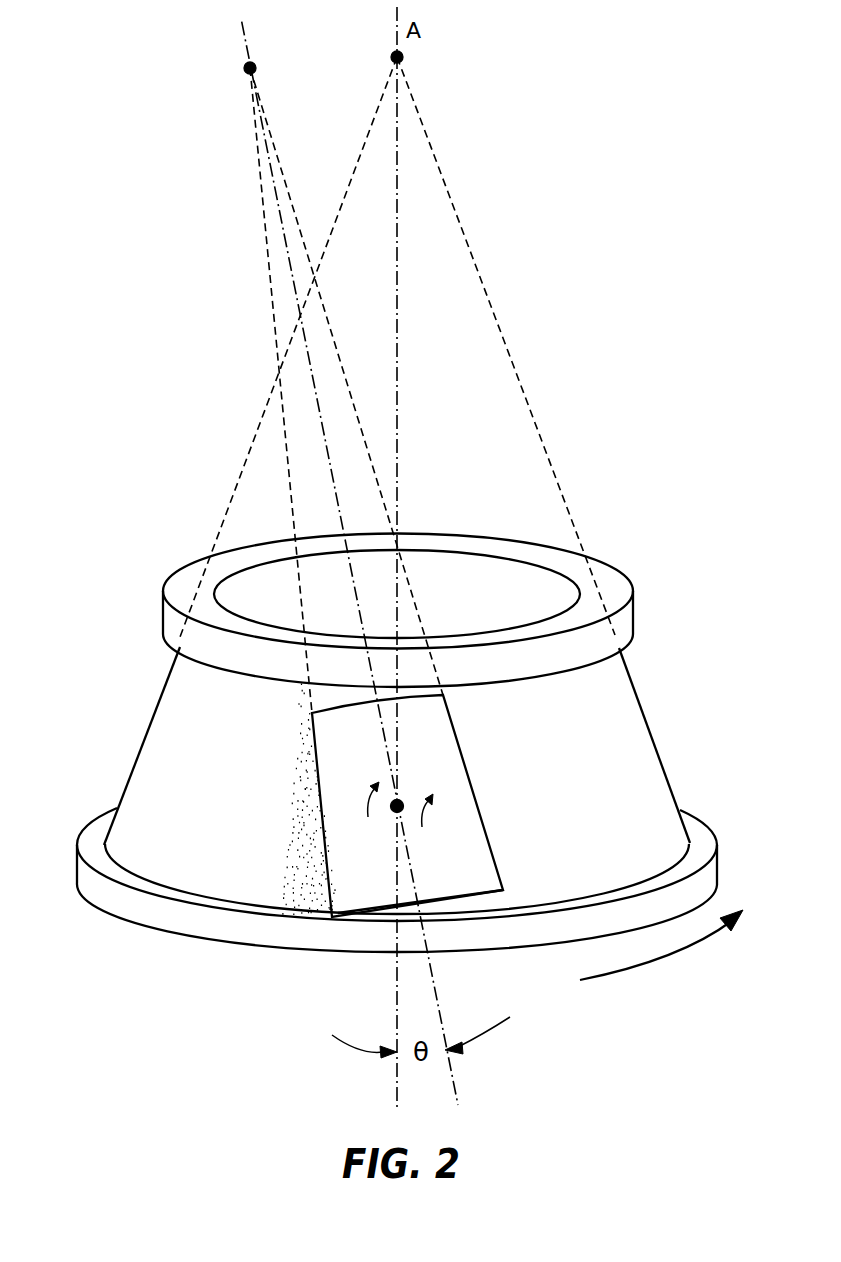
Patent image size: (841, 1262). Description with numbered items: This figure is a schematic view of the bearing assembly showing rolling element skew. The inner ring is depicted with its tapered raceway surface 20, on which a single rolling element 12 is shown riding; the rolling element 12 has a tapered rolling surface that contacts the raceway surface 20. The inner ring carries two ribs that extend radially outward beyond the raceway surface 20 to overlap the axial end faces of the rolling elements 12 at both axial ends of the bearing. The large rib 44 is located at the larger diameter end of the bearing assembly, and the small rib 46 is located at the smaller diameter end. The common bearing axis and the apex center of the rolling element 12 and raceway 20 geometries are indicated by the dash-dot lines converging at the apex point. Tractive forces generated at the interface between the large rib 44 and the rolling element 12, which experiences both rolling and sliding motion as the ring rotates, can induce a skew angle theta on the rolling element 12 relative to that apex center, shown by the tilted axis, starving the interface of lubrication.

The rolling element 12 is at (338, 768).
The raceway surface 20 is at (635, 760).
The large rib 44 is at (100, 885).
The small rib 46 is at (170, 622).